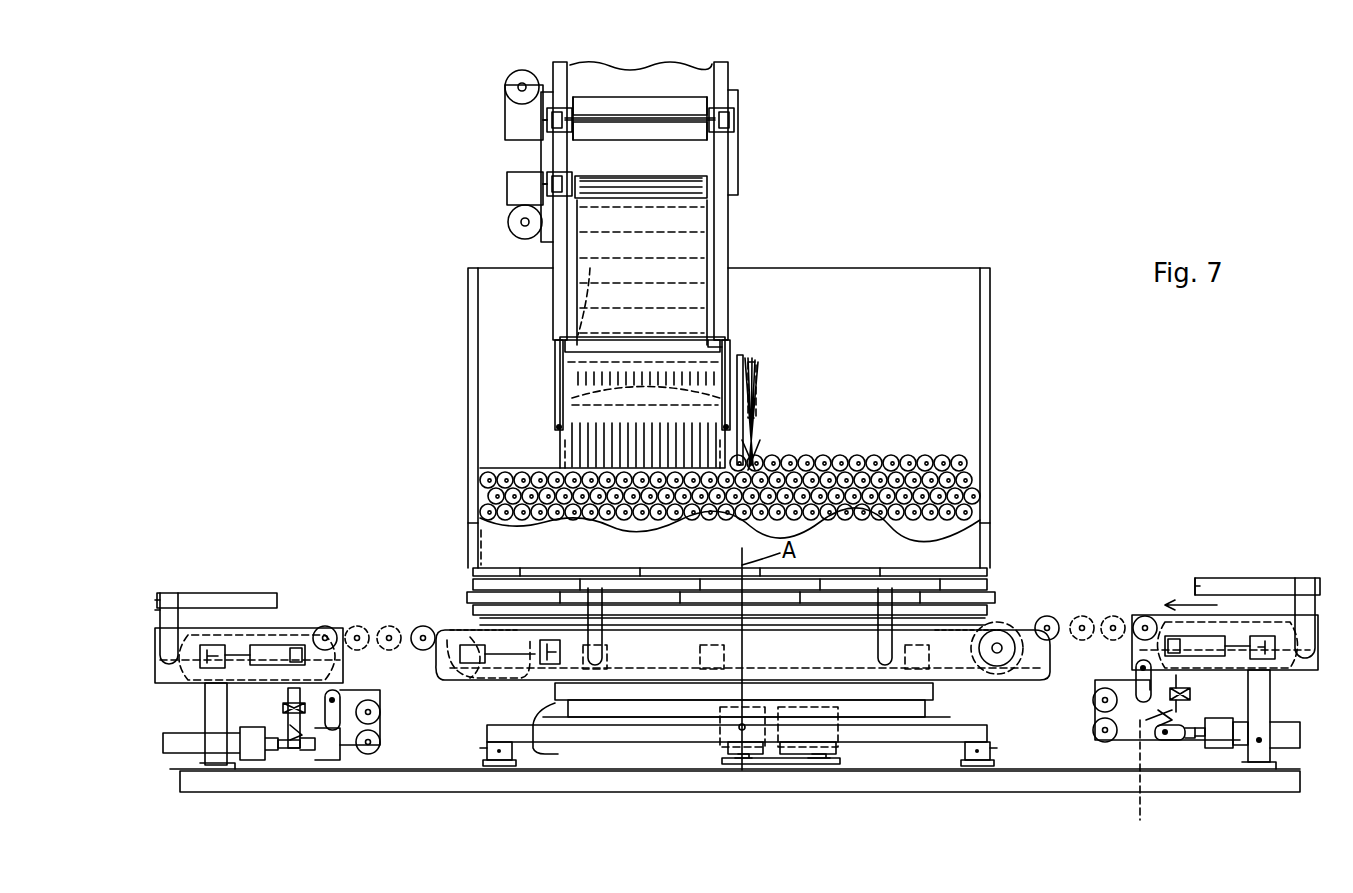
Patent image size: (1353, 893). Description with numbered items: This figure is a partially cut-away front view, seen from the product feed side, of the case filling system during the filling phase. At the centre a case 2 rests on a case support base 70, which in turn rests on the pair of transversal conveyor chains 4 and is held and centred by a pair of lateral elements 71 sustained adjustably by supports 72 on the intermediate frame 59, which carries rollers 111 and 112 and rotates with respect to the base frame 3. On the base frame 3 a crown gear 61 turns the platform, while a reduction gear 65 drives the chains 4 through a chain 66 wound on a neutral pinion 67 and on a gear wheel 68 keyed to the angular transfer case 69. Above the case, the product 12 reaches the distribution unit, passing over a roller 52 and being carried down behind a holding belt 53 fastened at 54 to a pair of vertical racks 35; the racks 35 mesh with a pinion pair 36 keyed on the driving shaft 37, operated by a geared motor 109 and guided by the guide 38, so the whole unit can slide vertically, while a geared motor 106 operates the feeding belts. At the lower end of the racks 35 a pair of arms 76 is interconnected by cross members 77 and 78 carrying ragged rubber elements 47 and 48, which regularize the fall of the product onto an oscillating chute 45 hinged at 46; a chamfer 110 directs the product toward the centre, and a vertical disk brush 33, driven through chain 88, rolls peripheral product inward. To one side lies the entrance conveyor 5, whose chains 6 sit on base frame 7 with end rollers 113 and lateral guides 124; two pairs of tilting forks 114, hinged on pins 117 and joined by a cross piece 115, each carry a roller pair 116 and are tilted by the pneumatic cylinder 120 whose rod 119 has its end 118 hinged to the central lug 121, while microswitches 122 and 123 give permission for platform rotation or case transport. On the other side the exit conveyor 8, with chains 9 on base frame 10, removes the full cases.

The case 2 is at (990, 322).
The base frame 3 is at (490, 726).
The pair of transversal conveyor chains 4 is at (462, 632).
The entrance conveyor 5 is at (1296, 568).
The transversal conveyor chains 6 is at (1248, 595).
The base frame 7 is at (1222, 634).
The exit conveyor 8 is at (254, 580).
The conveyor chains 9 is at (270, 628).
The base frame 10 is at (182, 628).
The product 12 is at (972, 460).
The vertical disk brush 33 is at (745, 360).
The pair of vertical racks 35 is at (553, 250).
The pinion pair 36 is at (548, 140).
The driving shaft 37 is at (700, 100).
The guide 38 is at (735, 190).
The chute 45 is at (560, 470).
The hinge 46 is at (557, 405).
The ragged rubber element 47 is at (560, 372).
The ragged rubber element 48 is at (560, 437).
The roller 52 is at (700, 178).
The belt 53 is at (690, 265).
The fastening point 54 is at (592, 289).
The intermediate frame 59 is at (1020, 670).
The crown gear 61 is at (548, 752).
The reduction gear 65 is at (835, 745).
The chain 66 is at (745, 762).
The neutral pinion 67 is at (822, 762).
The gear wheel 68 is at (725, 758).
The angular transfer case 69 is at (730, 745).
The case support base 70 is at (987, 572).
The pair of lateral elements 71 is at (990, 602).
The supports 72 is at (888, 600).
The pair of arms 76 is at (740, 340).
The cross member 77 is at (620, 345).
The cross member 78 is at (672, 355).
The chain 88 is at (758, 375).
The geared motor 106 is at (510, 185).
The geared motor 109 is at (505, 122).
The chamfer 110 is at (655, 468).
The pair of rollers 111 is at (1040, 614).
The pair of rollers 112 is at (418, 625).
The pair of end rollers 113 is at (1140, 615).
The tilting forks 114 is at (1125, 742).
The cross piece 115 is at (1141, 779).
The roller pair 116 is at (1077, 615).
The hinge pin 117 is at (1136, 670).
The rod end 118 is at (1195, 748).
The rod 119 is at (1200, 730).
The pneumatic operation cylinder 120 is at (1272, 735).
The central lug 121 is at (1160, 742).
The microswitch 122 is at (1190, 740).
The microswitch 123 is at (1190, 694).
The pair of lateral guides 124 is at (1195, 585).